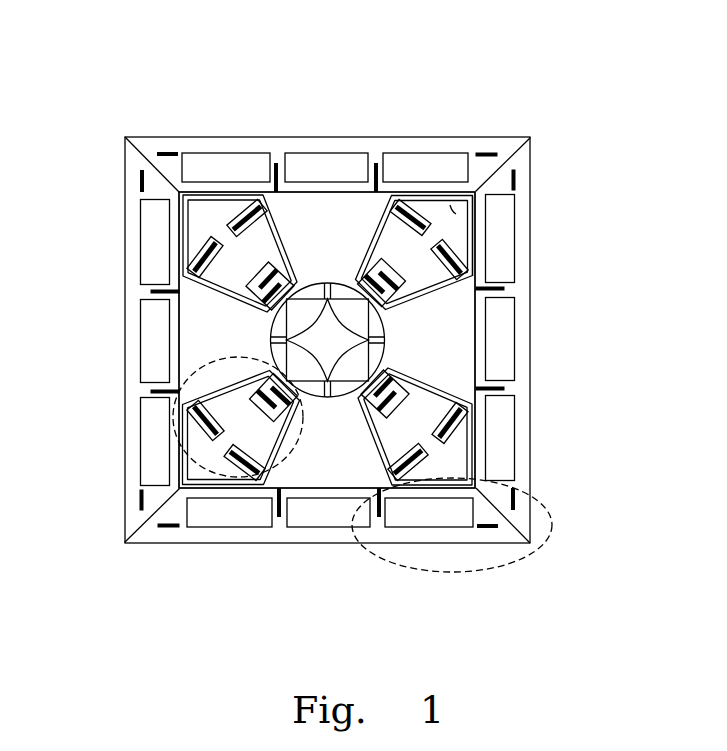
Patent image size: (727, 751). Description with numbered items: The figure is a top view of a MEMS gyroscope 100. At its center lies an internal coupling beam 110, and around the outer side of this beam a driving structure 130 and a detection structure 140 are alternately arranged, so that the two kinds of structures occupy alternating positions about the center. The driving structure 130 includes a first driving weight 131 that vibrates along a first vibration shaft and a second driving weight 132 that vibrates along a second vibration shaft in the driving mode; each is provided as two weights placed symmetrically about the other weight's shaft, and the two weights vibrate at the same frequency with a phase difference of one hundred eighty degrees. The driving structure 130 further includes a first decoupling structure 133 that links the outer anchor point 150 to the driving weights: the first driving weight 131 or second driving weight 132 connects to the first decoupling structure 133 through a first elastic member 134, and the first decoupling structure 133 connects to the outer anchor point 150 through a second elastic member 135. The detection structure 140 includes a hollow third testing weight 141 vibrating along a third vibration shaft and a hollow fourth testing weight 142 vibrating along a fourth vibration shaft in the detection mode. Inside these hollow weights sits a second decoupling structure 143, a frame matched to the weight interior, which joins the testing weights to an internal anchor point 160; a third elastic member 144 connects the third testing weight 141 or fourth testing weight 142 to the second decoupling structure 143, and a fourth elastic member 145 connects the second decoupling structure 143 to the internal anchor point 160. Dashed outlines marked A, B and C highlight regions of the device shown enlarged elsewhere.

The MEMS gyroscope 100 is at (247, 37).
The internal coupling beam 110 is at (368, 355).
The driving structure 130 is at (270, 623).
The first driving weight 131 is at (335, 462).
The second driving weight 132 is at (200, 322).
The first decoupling structure 133 is at (205, 532).
The first elastic member 134 is at (275, 498).
The second elastic member 135 is at (170, 527).
The detection structure 140 is at (418, 85).
The third testing weight 141 is at (215, 200).
The fourth testing weight 142 is at (472, 238).
The second decoupling structure 143 is at (273, 230).
The third elastic member 144 is at (290, 272).
The fourth elastic member 145 is at (252, 203).
The outer anchor point 150 is at (477, 193).
The internal anchor point 160 is at (200, 272).
The region A is at (485, 478).
The region B is at (203, 368).
The region C is at (450, 205).